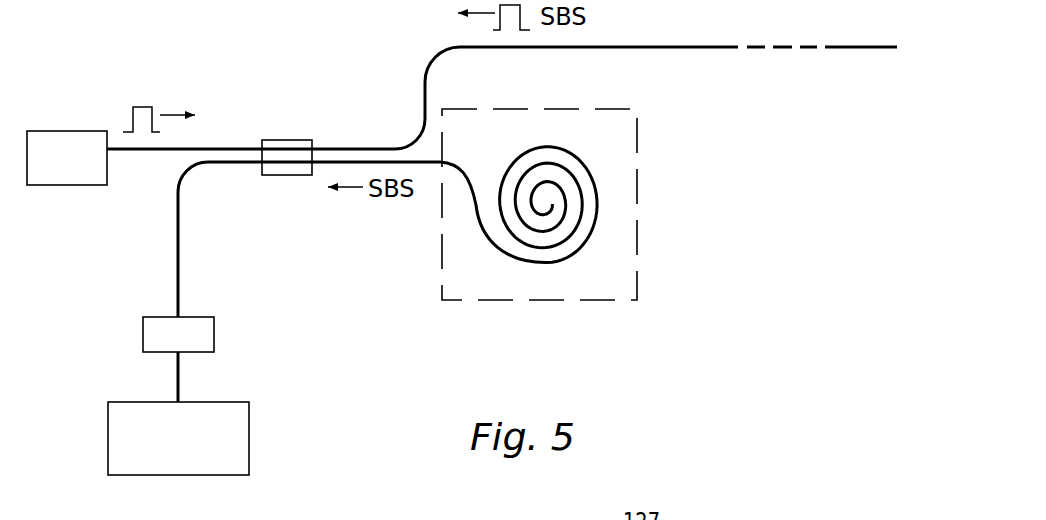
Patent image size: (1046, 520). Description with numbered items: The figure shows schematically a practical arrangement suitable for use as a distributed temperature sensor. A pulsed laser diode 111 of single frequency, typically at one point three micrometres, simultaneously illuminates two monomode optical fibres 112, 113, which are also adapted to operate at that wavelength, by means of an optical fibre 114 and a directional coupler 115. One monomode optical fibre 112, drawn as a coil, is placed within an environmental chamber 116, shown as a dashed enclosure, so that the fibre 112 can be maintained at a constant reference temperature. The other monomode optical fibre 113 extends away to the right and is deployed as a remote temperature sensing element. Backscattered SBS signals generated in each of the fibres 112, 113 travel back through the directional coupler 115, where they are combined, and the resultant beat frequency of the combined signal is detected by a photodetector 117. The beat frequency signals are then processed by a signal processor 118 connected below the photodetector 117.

The pulsed laser diode 111 is at (55, 128).
The monomode optical fibre 112 is at (589, 157).
The monomode optical fibre 113 is at (630, 50).
The optical fibre 114 is at (229, 146).
The directional coupler 115 is at (298, 137).
The environmental chamber 116 is at (643, 222).
The photodetector 117 is at (215, 333).
The signal processor 118 is at (250, 437).